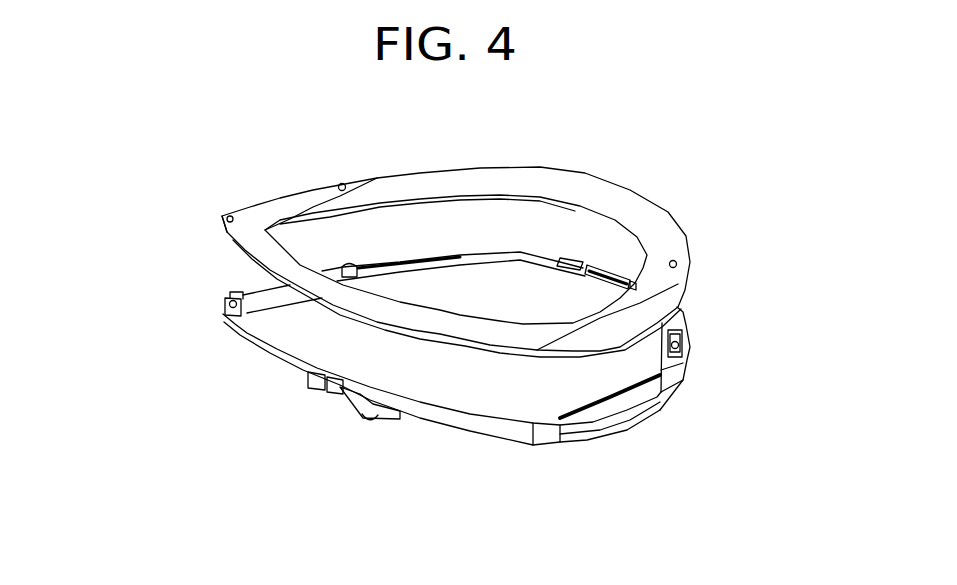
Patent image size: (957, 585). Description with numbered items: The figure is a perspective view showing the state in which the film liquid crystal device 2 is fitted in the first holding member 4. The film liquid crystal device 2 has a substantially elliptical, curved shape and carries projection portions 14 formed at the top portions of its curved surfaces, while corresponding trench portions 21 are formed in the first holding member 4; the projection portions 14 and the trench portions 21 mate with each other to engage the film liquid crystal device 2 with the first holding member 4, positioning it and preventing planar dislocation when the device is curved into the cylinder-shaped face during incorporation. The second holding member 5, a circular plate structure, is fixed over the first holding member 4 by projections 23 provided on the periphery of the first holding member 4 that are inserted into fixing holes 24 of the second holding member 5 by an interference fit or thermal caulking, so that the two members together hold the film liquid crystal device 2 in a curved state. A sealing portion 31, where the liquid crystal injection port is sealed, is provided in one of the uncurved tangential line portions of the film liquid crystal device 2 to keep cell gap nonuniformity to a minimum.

The film liquid crystal device 2 is at (540, 403).
The first holding member 4 is at (447, 425).
The second holding member 5 is at (228, 246).
The projection portions 14 is at (585, 265).
The trench portions 21 is at (587, 267).
The projections 23 is at (223, 300).
The fixing holes 24 is at (222, 217).
The sealing portion 31 is at (660, 393).